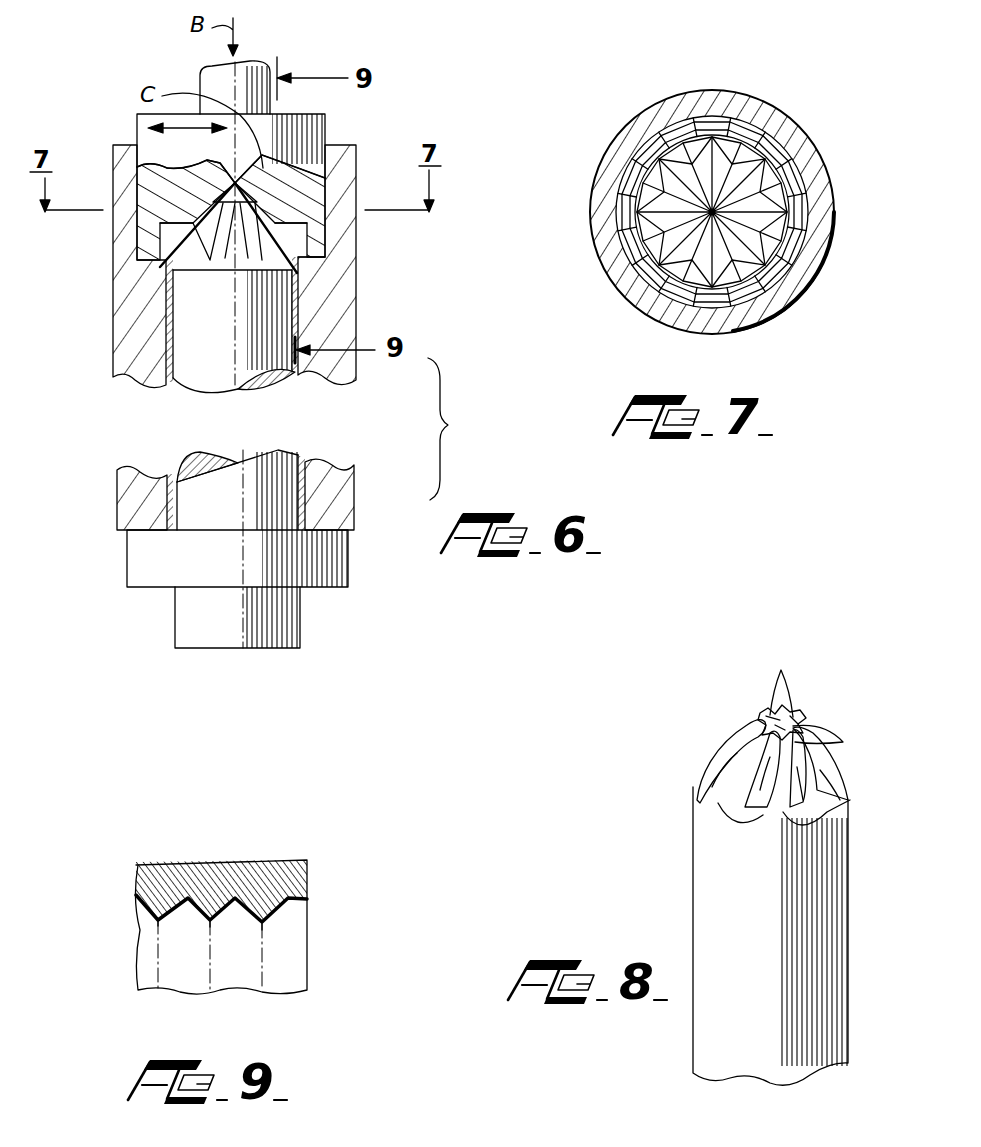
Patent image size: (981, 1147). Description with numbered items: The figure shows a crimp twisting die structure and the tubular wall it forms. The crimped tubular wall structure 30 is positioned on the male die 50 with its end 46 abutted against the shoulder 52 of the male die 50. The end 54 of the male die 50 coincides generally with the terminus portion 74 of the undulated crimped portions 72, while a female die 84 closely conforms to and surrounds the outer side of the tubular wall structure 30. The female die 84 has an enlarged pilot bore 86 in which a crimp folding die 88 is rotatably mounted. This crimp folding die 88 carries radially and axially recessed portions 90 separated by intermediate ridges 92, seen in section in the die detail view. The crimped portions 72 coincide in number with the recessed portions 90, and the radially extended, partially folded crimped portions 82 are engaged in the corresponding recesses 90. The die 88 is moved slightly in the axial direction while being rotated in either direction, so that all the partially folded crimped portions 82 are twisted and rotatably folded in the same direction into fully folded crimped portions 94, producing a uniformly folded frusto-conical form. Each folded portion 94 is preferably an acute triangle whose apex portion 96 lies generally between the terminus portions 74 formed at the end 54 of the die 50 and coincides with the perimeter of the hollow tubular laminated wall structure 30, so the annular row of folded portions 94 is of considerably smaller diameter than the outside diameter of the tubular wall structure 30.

In FIG. 6, the crimped tubular wall structure 30 is at (330, 302).
In FIG. 6, the end 46 is at (263, 533).
In FIG. 6, the male die 50 is at (256, 517).
In FIG. 6, the shoulder 52 is at (262, 493).
In FIG. 6, the end 54 is at (222, 272).
In FIG. 6, the crimped portions 72 is at (235, 225).
In FIG. 8, the crimped portions 72 is at (763, 710).
In FIG. 6, the terminus portion 74 is at (303, 268).
In FIG. 8, the terminus portion 74 is at (712, 767).
In FIG. 6, the partially folded crimped portions 82 is at (257, 203).
In FIG. 9, the partially folded crimped portions 82 is at (115, 920).
In FIG. 6, the female die 84 is at (345, 368).
In FIG. 7, the female die 84 is at (830, 184).
In FIG. 6, the enlarged pilot bore 86 is at (330, 208).
In FIG. 7, the enlarged pilot bore 86 is at (790, 248).
In FIG. 6, the crimp folding die 88 is at (313, 127).
In FIG. 7, the crimp folding die 88 is at (648, 160).
In FIG. 9, the crimp folding die 88 is at (188, 865).
In FIG. 7, the radially and axially recessed portions 90 is at (661, 185).
In FIG. 9, the radially and axially recessed portions 90 is at (238, 897).
In FIG. 7, the intermediate ridges 92 is at (650, 212).
In FIG. 9, the intermediate ridges 92 is at (262, 927).
In FIG. 8, the fully folded crimped portions 94 is at (849, 749).
In FIG. 8, the apex portion 96 is at (697, 820).